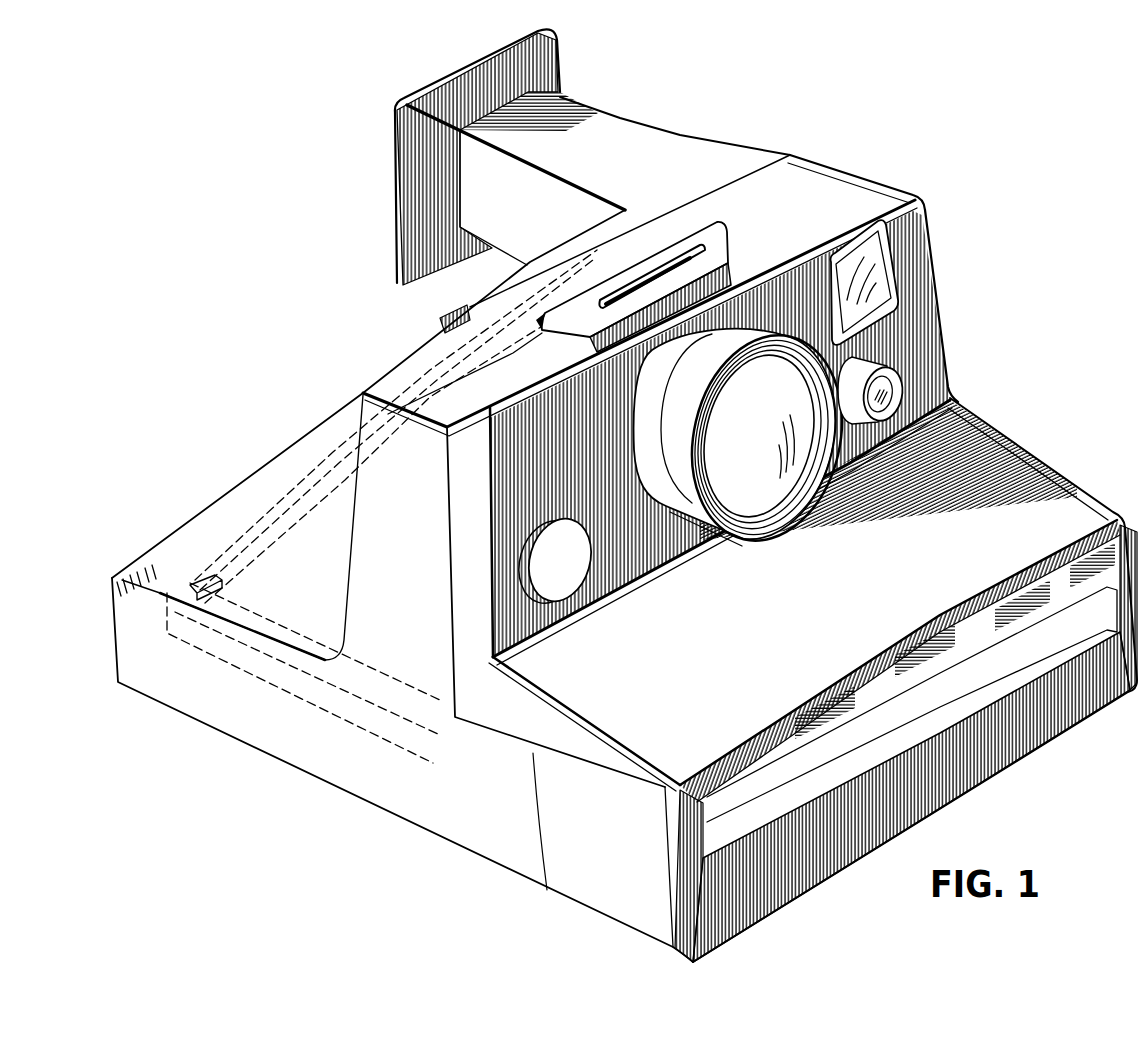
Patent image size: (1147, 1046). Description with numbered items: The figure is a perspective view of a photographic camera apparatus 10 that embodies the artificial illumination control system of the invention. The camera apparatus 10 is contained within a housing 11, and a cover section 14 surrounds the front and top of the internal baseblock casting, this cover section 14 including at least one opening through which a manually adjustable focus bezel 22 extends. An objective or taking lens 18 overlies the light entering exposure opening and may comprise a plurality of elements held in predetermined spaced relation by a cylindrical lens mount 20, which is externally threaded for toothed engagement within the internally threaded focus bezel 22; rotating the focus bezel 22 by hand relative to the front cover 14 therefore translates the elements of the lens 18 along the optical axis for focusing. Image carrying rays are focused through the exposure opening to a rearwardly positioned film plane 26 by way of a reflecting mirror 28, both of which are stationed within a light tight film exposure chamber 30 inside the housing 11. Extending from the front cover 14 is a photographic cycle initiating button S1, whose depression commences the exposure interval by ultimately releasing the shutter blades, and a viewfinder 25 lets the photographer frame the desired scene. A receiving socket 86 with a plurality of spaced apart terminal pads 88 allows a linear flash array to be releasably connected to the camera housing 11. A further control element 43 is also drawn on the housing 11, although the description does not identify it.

The photographic camera apparatus 10 is at (840, 162).
The housing 11 is at (940, 337).
The cover section 14 is at (1077, 490).
The objective lens 18 is at (737, 495).
The cylindrical lens mount 20 is at (800, 385).
The focus bezel 22 is at (680, 424).
The viewfinder 25 is at (884, 252).
The film plane 26 is at (307, 585).
The reflecting mirror 28 is at (275, 475).
The film exposure chamber 30 is at (270, 545).
The control knob 43 is at (907, 392).
The receiving socket 86 is at (697, 259).
The terminal pads 88 is at (633, 293).
The photographic cycle initiating button S1 is at (583, 592).